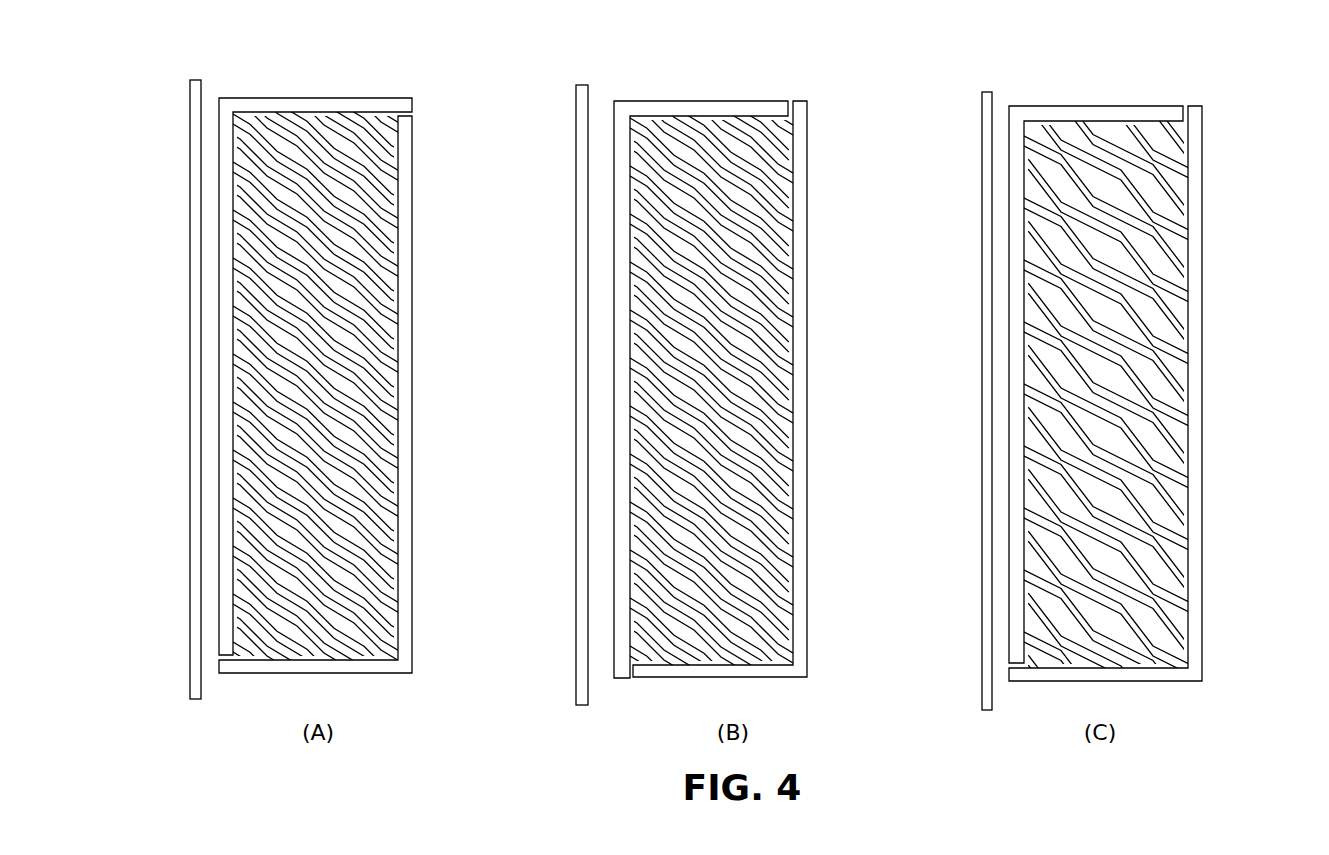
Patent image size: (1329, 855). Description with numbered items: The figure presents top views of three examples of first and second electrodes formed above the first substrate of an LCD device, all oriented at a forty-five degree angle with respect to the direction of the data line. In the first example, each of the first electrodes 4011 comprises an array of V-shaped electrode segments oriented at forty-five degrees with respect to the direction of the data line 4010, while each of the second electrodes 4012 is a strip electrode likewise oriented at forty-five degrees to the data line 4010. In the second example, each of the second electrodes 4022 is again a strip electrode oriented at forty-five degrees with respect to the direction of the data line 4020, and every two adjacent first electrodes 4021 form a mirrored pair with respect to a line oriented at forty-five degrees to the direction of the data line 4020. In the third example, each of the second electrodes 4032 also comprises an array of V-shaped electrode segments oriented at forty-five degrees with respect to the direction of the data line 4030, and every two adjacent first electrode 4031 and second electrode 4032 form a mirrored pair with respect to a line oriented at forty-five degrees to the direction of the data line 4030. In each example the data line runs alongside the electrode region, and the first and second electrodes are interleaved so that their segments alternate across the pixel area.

The data line 4010 is at (190, 368).
The first electrode 4011 is at (252, 127).
The second electrode 4012 is at (367, 120).
The data line 4020 is at (576, 368).
The first electrode 4021 is at (640, 125).
The second electrode 4022 is at (810, 142).
The data line 4030 is at (982, 368).
The first electrode 4031 is at (1025, 130).
The second electrode 4032 is at (1180, 130).